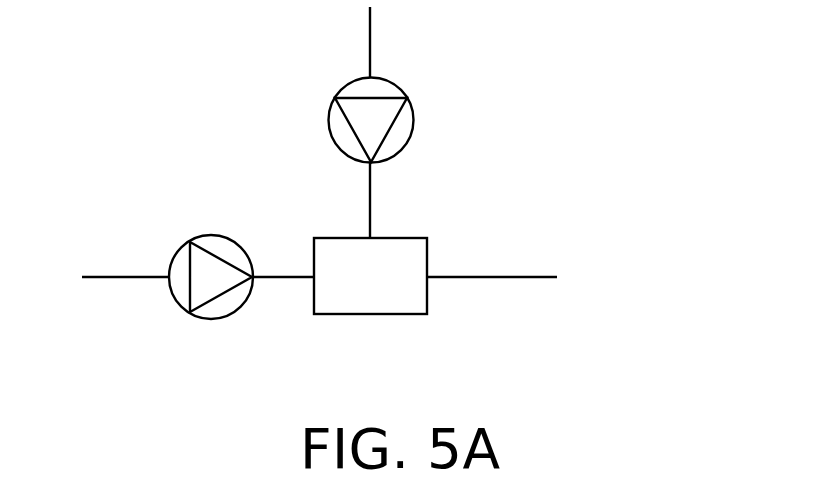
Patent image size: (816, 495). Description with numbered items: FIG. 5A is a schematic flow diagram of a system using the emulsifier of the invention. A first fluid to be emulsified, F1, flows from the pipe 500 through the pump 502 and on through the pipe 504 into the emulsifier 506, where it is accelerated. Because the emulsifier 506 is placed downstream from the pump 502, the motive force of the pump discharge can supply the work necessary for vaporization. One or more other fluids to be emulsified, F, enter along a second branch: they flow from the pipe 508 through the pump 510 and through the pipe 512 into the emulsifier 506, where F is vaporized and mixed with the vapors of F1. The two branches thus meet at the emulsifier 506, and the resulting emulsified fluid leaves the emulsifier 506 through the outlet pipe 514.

The pipe 500 is at (155, 275).
The pump 502 is at (240, 312).
The pipe 504 is at (265, 277).
The emulsifier 506 is at (373, 300).
The pipe 508 is at (370, 43).
The pump 510 is at (328, 113).
The pipe 512 is at (368, 188).
The outlet pipe 514 is at (477, 273).